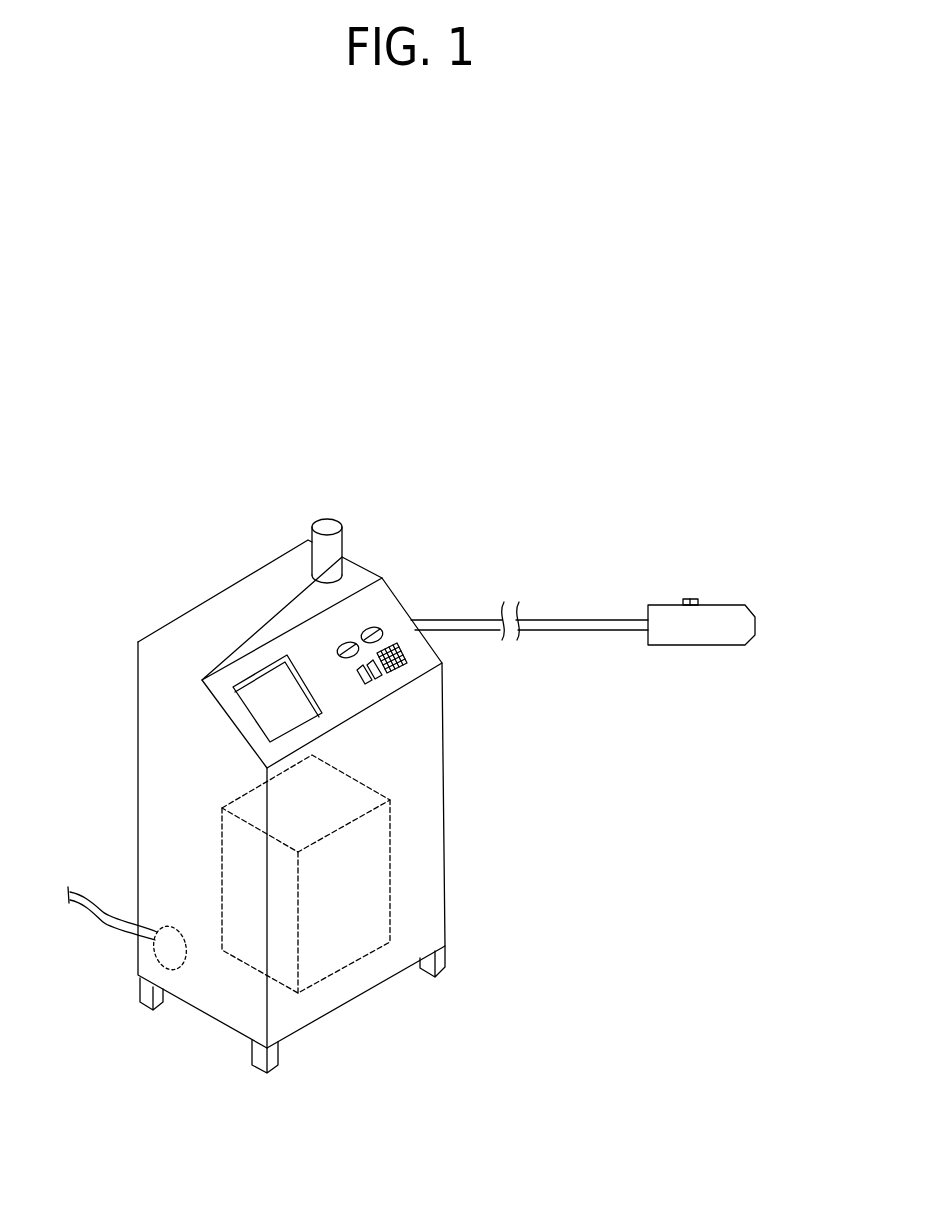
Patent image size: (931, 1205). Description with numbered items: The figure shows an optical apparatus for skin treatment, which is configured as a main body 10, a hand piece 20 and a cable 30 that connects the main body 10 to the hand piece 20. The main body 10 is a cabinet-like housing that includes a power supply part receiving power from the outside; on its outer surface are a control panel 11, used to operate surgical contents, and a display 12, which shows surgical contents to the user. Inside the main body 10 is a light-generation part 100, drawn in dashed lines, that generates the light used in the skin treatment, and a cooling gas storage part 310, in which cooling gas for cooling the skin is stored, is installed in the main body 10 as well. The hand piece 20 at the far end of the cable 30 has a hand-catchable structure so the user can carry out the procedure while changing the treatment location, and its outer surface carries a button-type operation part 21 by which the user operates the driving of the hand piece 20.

The main body 10 is at (190, 610).
The control panel 11 is at (393, 645).
The display 12 is at (252, 698).
The hand piece 20 is at (737, 603).
The operation part 21 is at (693, 598).
The cable 30 is at (600, 620).
The light-generation part 100 is at (348, 953).
The cooling gas storage part 310 is at (305, 532).